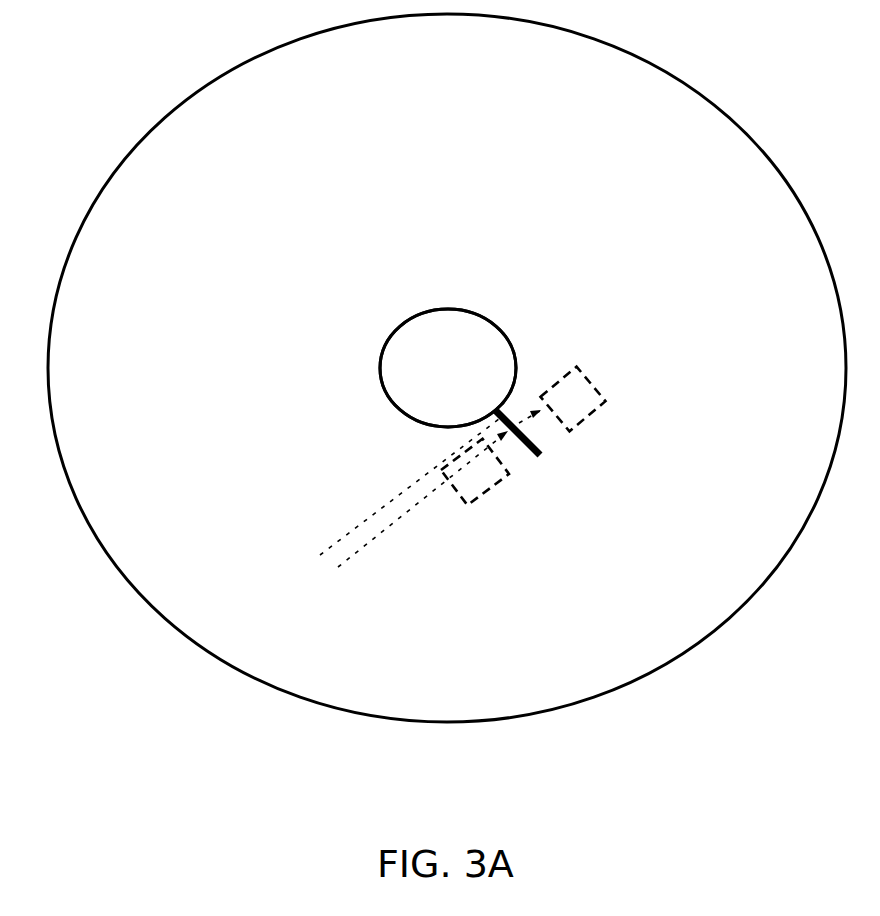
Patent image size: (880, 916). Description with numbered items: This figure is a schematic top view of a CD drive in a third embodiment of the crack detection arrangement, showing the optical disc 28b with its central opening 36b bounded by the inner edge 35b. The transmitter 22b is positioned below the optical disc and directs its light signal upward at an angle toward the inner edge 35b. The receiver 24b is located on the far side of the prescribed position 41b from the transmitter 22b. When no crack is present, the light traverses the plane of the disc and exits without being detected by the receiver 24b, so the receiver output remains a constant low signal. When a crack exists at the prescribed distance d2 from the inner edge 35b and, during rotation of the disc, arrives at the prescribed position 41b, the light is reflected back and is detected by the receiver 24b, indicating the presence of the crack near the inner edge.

The disk 28b is at (678, 115).
The inner edge 35b is at (452, 307).
The center hole 36b is at (477, 380).
The prescribed position 41b is at (540, 456).
The receiver 24b is at (597, 387).
The transmitter 22b is at (477, 498).
The prescribed distance d2 is at (358, 594).